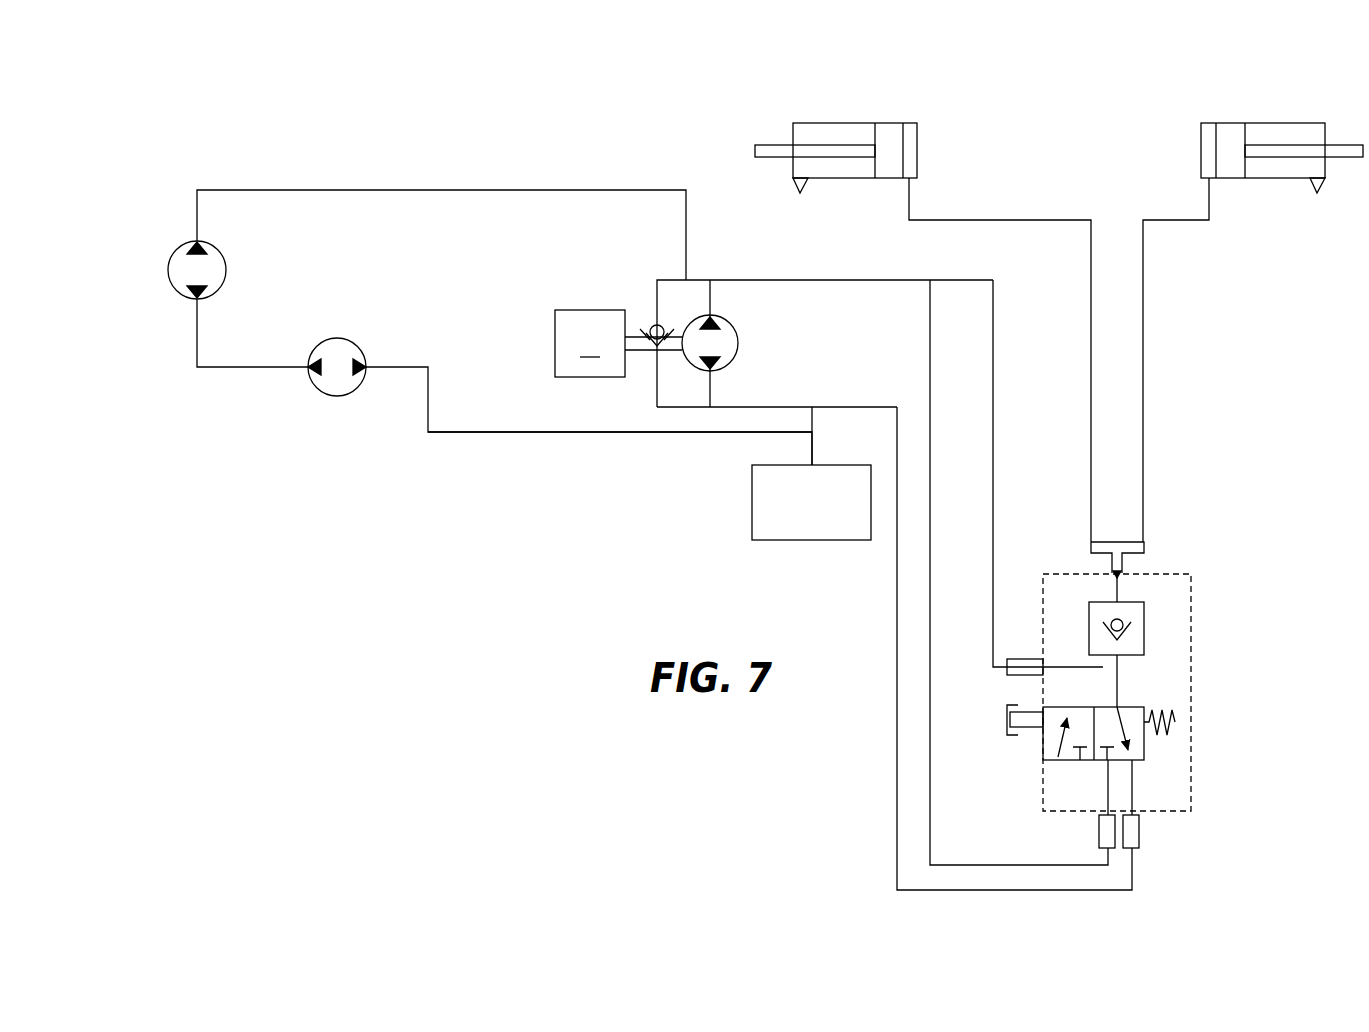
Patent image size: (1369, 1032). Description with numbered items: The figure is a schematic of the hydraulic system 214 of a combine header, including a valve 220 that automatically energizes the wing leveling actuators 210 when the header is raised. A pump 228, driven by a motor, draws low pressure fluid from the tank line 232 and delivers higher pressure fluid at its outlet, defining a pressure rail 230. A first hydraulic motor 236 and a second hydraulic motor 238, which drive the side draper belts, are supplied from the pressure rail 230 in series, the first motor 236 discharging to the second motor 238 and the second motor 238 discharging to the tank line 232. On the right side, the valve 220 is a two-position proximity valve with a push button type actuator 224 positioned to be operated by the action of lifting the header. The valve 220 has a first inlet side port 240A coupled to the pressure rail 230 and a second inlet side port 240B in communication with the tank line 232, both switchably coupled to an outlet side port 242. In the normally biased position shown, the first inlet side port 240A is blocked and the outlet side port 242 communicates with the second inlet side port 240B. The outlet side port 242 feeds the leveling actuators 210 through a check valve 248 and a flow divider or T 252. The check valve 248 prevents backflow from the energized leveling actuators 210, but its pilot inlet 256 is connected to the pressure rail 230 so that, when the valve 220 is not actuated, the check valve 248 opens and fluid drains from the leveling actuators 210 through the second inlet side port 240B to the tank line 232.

The hydraulic system 214 is at (234, 128).
The leveling actuators 210 is at (809, 107).
The first hydraulic motor 236 is at (167, 268).
The second hydraulic motor 238 is at (330, 396).
The pressure rail 230 is at (787, 280).
The pump 228 is at (738, 333).
The tank line 232 is at (812, 448).
The pilot inlet 256 is at (1068, 667).
The flow divider 252 is at (1122, 562).
The check valve 248 is at (1152, 630).
The outlet side port 242 is at (1117, 708).
The valve 220 is at (1152, 757).
The actuator 224 is at (1030, 727).
The first inlet side port 240A is at (1108, 762).
The second inlet side port 240B is at (1132, 765).